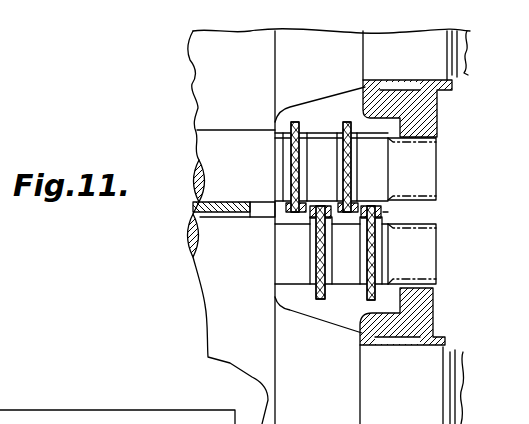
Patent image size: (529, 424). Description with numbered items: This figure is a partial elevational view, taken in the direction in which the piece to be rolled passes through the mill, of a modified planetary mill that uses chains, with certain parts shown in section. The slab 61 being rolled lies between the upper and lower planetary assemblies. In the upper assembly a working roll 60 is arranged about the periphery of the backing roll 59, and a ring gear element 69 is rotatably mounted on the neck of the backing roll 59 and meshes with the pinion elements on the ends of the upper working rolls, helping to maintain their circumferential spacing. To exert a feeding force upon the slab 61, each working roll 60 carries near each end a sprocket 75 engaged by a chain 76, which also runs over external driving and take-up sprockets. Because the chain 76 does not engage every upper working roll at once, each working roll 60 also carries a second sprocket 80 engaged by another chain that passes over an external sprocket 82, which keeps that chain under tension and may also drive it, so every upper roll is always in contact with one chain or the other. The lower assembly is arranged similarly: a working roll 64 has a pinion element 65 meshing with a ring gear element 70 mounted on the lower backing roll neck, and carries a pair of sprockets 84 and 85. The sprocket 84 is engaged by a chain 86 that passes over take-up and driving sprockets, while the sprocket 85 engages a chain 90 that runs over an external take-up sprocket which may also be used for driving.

The backing roll 59 is at (205, 98).
The working roll 60 is at (197, 142).
The slab 61 is at (191, 205).
The working roll 64 is at (186, 254).
The pinion element 65 is at (433, 248).
The ring gear element 69 is at (435, 118).
The ring gear element 70 is at (427, 313).
The sprocket 75 is at (294, 122).
The chain 76 is at (272, 202).
The second sprocket 80 is at (348, 122).
The external sprocket 82 is at (432, 162).
The sprocket 84 is at (361, 205).
The sprocket 85 is at (367, 300).
The chain 86 is at (305, 218).
The chain 90 is at (383, 212).